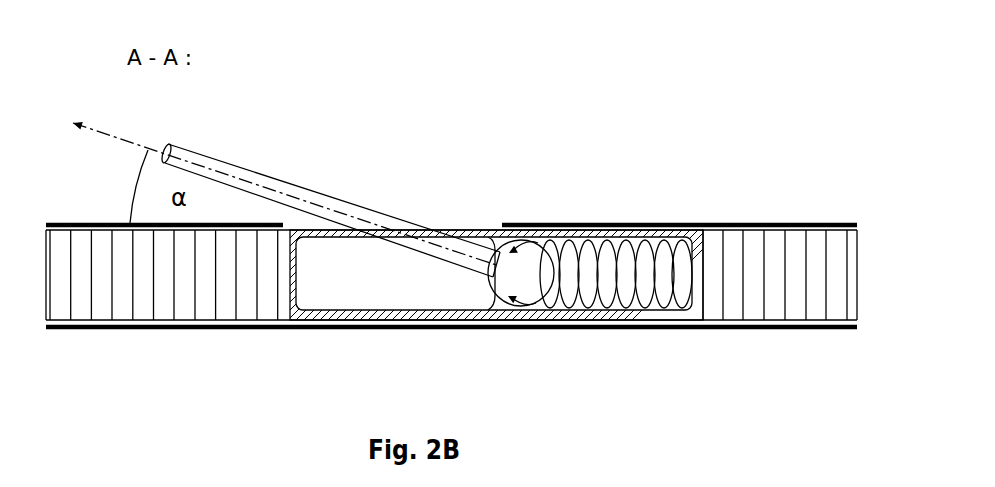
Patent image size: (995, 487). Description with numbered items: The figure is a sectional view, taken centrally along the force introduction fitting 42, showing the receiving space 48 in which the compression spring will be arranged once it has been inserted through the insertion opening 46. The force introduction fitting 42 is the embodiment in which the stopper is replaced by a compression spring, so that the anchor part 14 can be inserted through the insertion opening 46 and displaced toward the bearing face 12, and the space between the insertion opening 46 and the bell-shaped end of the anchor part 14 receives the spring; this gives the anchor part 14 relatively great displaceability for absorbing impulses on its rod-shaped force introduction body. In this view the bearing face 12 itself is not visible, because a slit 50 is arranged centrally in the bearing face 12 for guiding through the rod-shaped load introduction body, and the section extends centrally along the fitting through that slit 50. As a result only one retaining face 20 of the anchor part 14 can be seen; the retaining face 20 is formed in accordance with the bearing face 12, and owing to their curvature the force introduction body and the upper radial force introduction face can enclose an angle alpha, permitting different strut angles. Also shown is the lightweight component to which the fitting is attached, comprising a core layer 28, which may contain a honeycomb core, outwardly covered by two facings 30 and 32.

The bearing face 12 is at (533, 306).
The anchor part 14 is at (350, 205).
The retaining face 20 is at (543, 230).
The core layer 28 is at (82, 267).
The facing 30 is at (108, 330).
The facing 32 is at (90, 222).
The force introduction fitting 42 is at (486, 90).
The insertion opening 46 is at (672, 218).
The receiving space 48 is at (590, 232).
The slit 50 is at (513, 225).